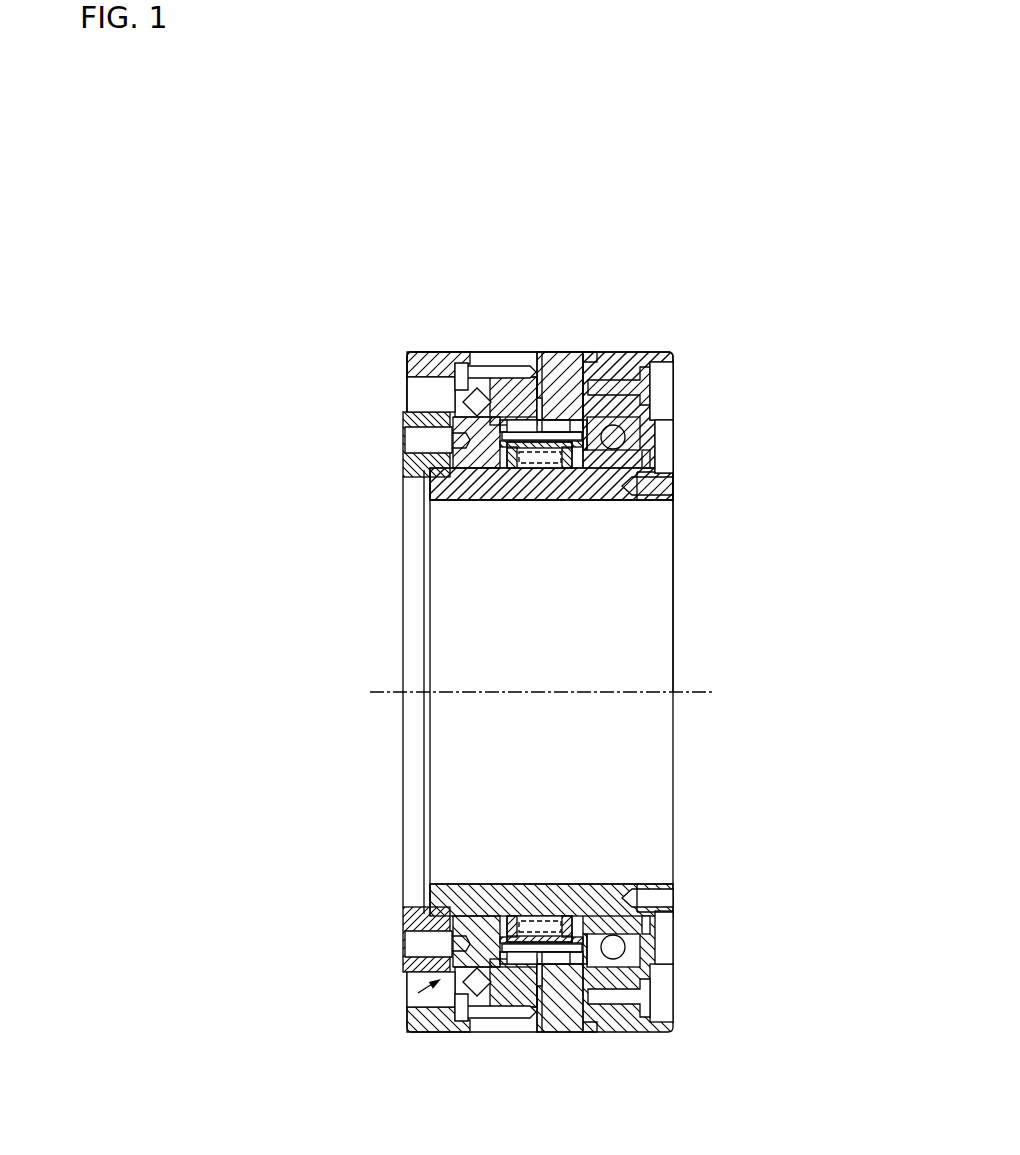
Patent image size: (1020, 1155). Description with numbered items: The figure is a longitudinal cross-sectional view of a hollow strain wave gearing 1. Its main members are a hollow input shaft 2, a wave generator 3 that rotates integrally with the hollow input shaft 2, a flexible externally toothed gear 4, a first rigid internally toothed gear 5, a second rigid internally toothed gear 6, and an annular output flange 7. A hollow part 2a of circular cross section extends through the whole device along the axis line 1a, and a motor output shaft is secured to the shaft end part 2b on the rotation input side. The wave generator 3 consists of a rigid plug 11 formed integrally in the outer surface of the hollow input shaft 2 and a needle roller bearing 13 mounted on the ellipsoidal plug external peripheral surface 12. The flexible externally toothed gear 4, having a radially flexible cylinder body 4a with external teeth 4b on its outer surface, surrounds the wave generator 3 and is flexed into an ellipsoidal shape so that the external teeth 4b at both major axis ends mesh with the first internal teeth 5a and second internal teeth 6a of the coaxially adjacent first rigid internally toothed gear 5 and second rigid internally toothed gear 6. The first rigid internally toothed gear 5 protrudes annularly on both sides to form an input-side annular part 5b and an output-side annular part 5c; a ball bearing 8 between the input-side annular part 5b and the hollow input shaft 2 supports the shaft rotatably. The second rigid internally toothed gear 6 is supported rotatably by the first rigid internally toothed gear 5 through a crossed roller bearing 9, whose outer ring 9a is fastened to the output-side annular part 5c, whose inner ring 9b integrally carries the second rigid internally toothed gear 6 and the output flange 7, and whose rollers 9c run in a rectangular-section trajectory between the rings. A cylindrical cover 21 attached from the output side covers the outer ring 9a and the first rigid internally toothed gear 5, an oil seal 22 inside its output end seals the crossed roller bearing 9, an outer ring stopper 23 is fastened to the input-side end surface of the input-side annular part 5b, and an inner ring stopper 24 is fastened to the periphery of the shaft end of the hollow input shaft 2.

The hollow strain wave gearing 1 is at (733, 304).
The axis line 1a is at (697, 690).
The hollow input shaft 2 is at (613, 505).
The hollow part 2a is at (622, 650).
The shaft end part 2b is at (660, 486).
The wave generator 3 is at (588, 455).
The flexible externally toothed gear 4 is at (355, 483).
The cylinder body 4a is at (503, 446).
The external teeth 4b is at (500, 433).
The first rigid internally toothed gear 5 is at (553, 398).
The first internal teeth 5a is at (582, 372).
The input-side annular part 5b is at (622, 360).
The output-side annular part 5c is at (540, 372).
The second rigid internally toothed gear 6 is at (519, 398).
The second internal teeth 6a is at (524, 372).
The output flange 7 is at (398, 463).
The ball bearing 8 is at (648, 436).
The crossed roller bearing 9 is at (412, 356).
The outer ring 9a is at (482, 366).
The inner ring 9b is at (430, 403).
The rollers 9c is at (457, 363).
The rigid plug 11 is at (549, 470).
The plug external peripheral surface 12 is at (540, 470).
The needle roller bearing 13 is at (522, 470).
The cylindrical cover 21 is at (425, 346).
The oil seal 22 is at (402, 383).
The outer ring stopper 23 is at (670, 405).
The inner ring stopper 24 is at (648, 458).